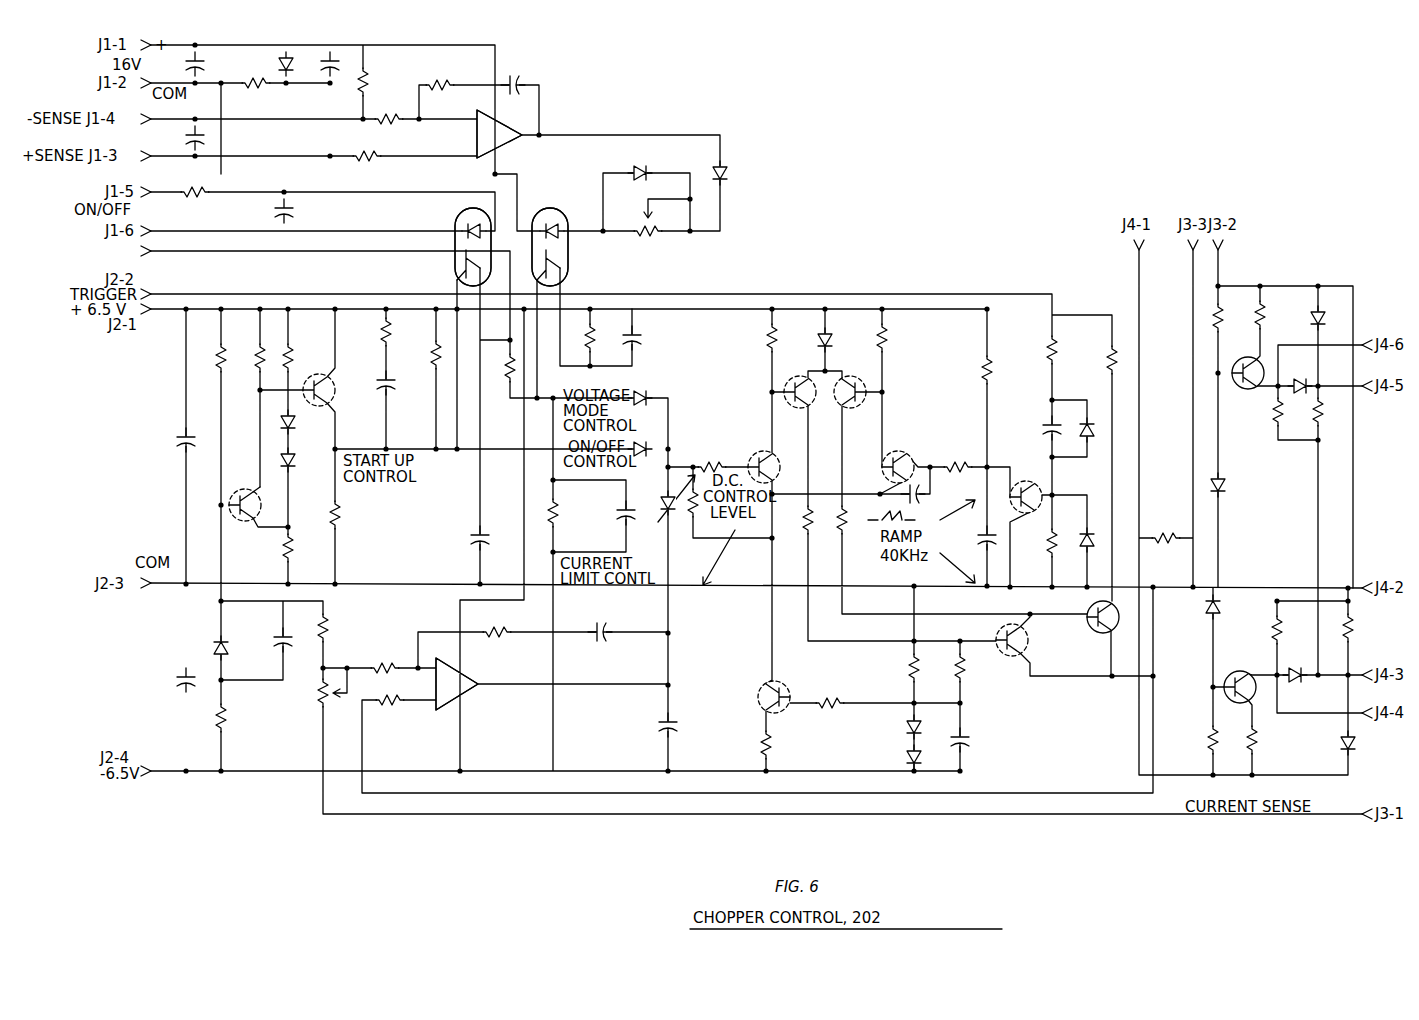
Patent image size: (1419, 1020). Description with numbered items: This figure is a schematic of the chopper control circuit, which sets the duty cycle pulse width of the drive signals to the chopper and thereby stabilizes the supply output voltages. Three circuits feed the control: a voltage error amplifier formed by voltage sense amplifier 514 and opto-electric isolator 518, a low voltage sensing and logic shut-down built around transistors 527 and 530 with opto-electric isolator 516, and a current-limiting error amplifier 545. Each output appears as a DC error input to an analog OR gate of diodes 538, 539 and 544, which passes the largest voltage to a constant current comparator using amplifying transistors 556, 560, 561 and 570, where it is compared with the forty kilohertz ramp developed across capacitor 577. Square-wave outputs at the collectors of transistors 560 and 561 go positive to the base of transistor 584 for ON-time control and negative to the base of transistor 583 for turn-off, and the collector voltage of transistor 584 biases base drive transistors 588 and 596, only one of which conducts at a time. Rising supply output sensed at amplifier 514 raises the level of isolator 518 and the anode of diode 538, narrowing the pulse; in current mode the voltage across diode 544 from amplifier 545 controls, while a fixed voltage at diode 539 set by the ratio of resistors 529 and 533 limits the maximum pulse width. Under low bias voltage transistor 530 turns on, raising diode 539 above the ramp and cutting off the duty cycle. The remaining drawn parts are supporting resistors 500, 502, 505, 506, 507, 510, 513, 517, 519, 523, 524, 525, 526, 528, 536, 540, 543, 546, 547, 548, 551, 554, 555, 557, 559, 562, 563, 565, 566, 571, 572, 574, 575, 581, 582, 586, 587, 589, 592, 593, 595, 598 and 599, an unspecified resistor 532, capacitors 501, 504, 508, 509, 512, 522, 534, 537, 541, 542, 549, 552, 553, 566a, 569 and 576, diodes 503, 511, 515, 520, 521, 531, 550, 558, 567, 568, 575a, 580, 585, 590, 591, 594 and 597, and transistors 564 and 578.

The resistor 500 is at (596, 338).
The capacitor 501 is at (203, 50).
The resistor 502 is at (252, 70).
The diode 503 is at (296, 55).
The capacitor 504 is at (338, 55).
The resistor 505 is at (368, 68).
The resistor 506 is at (389, 105).
The resistor 507 is at (440, 80).
The capacitor 508 is at (512, 74).
The capacitor 509 is at (190, 138).
The resistor 510 is at (198, 190).
The diode 511 is at (296, 422).
The capacitor 512 is at (294, 211).
The resistor 513 is at (365, 156).
The voltage sense amplifier 514 is at (477, 135).
The diode 515 is at (296, 460).
The opto-electric isolator 516 is at (456, 222).
The resistor 517 is at (392, 706).
The opto-electric isolator 518 is at (566, 220).
The resistor 519 is at (645, 237).
The diode 520 is at (625, 165).
The diode 521 is at (727, 178).
The capacitor 522 is at (180, 440).
The resistor 523 is at (218, 355).
The resistor 524 is at (256, 355).
The resistor 525 is at (906, 663).
The resistor 526 is at (292, 350).
The transistor 527 is at (240, 490).
The resistor 528 is at (282, 549).
The resistor 529 is at (338, 507).
The transistor 530 is at (333, 375).
The diode 531 is at (1224, 487).
The resistor 532 is at (391, 329).
The resistor 533 is at (432, 372).
The capacitor 534 is at (397, 378).
The resistor 536 is at (507, 350).
The capacitor 537 is at (490, 532).
The diode 538 is at (643, 390).
The diode 539 is at (652, 440).
The resistor 540 is at (560, 506).
The capacitor 541 is at (614, 516).
The capacitor 542 is at (600, 622).
The resistor 543 is at (495, 626).
The diode 544 is at (660, 499).
The current-limiting error amplifier 545 is at (478, 688).
The resistor 546 is at (385, 663).
The resistor 547 is at (330, 633).
The resistor 548 is at (316, 694).
The capacitor 549 is at (296, 635).
The diode 550 is at (230, 640).
The resistor 551 is at (228, 714).
The capacitor 552 is at (178, 680).
The capacitor 553 is at (678, 725).
The resistor 554 is at (715, 450).
The resistor 555 is at (690, 515).
The amplifying transistor 556 is at (757, 452).
The resistor 557 is at (765, 336).
The diode 558 is at (820, 332).
The resistor 559 is at (886, 345).
The amplifying transistor 560 is at (855, 375).
The amplifying transistor 561 is at (796, 375).
The resistor 562 is at (802, 535).
The resistor 563 is at (850, 535).
The transistor 564 is at (780, 684).
The resistor 565 is at (772, 744).
The resistor 566 is at (840, 698).
The capacitor 566a is at (645, 340).
The diode 567 is at (904, 725).
The diode 568 is at (904, 755).
The capacitor 569 is at (970, 745).
The amplifying transistor 570 is at (893, 450).
The resistor 571 is at (980, 372).
The resistor 572 is at (1045, 355).
The resistor 574 is at (1045, 422).
The resistor 575 is at (955, 462).
The diode 575a is at (1090, 410).
The capacitor 576 is at (926, 494).
The capacitor 577 is at (977, 540).
The transistor 578 is at (1022, 488).
The diode 580 is at (1093, 520).
The resistor 581 is at (1106, 360).
The resistor 582 is at (1158, 532).
The transistor 583 is at (998, 630).
The transistor 584 is at (1095, 630).
The diode 585 is at (1205, 608).
The resistor 586 is at (1207, 735).
The resistor 587 is at (1258, 740).
The base drive transistor 588 is at (1240, 671).
The resistor 589 is at (1271, 631).
The diode 590 is at (1297, 682).
The diode 591 is at (1338, 744).
The resistor 592 is at (1353, 624).
The resistor 593 is at (1225, 300).
The diode 594 is at (1325, 305).
The resistor 595 is at (1265, 318).
The base drive transistor 596 is at (1248, 360).
The diode 597 is at (1302, 380).
The resistor 598 is at (1312, 412).
The resistor 599 is at (1272, 410).